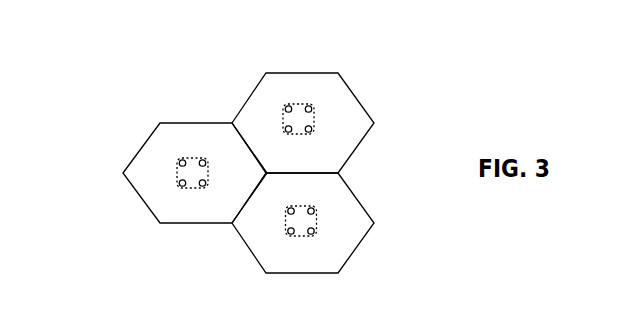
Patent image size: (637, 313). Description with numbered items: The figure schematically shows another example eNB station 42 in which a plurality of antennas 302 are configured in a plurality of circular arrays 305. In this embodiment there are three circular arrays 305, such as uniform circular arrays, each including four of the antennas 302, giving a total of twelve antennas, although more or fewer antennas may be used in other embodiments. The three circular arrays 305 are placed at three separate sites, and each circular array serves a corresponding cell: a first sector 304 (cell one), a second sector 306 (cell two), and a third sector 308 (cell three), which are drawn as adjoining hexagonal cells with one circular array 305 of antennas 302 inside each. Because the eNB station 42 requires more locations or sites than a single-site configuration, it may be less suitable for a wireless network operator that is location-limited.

The eNB station 42 is at (389, 56).
The antennas 302 is at (288, 106).
The first sector 304 is at (281, 165).
The circular arrays 305 is at (316, 119).
The second sector 306 is at (174, 217).
The third sector 308 is at (285, 265).